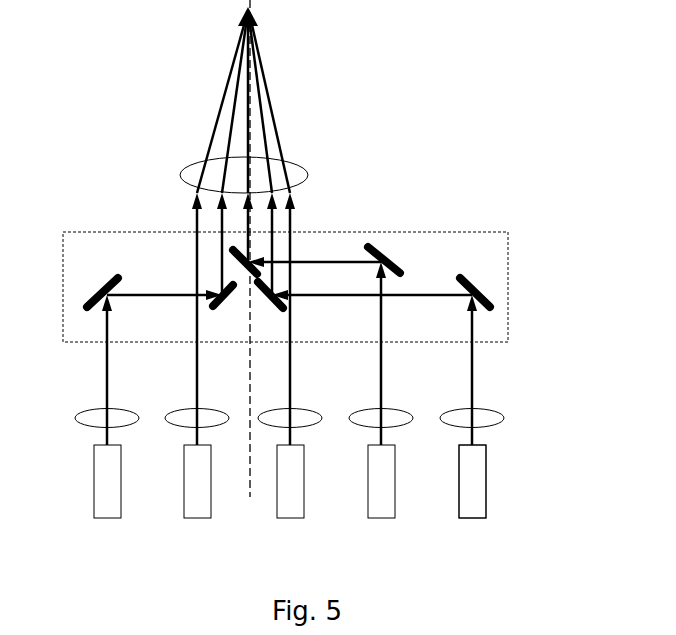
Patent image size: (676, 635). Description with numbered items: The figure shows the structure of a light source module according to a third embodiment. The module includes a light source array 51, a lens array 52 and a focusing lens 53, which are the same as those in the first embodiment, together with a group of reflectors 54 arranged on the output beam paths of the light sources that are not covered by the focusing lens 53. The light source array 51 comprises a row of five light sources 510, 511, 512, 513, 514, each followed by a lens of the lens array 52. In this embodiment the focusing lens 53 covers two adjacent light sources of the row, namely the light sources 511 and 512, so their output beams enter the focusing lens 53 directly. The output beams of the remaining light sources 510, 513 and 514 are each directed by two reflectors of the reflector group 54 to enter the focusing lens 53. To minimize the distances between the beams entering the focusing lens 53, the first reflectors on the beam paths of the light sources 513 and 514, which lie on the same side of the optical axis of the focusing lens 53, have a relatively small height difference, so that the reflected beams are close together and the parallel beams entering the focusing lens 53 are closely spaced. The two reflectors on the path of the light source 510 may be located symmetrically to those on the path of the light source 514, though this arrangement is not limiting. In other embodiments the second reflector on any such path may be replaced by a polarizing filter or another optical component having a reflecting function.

The light source array 51 is at (514, 467).
The lens array 52 is at (330, 387).
The focusing lens 53 is at (285, 149).
The mirror assembly 54 is at (326, 277).
The light source 510 is at (127, 394).
The light source 511 is at (163, 394).
The light source 512 is at (258, 394).
The light source 513 is at (351, 394).
The light source 514 is at (409, 394).